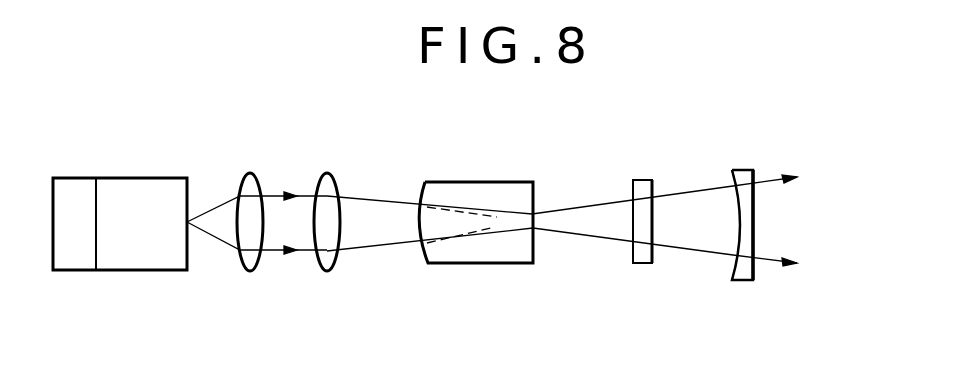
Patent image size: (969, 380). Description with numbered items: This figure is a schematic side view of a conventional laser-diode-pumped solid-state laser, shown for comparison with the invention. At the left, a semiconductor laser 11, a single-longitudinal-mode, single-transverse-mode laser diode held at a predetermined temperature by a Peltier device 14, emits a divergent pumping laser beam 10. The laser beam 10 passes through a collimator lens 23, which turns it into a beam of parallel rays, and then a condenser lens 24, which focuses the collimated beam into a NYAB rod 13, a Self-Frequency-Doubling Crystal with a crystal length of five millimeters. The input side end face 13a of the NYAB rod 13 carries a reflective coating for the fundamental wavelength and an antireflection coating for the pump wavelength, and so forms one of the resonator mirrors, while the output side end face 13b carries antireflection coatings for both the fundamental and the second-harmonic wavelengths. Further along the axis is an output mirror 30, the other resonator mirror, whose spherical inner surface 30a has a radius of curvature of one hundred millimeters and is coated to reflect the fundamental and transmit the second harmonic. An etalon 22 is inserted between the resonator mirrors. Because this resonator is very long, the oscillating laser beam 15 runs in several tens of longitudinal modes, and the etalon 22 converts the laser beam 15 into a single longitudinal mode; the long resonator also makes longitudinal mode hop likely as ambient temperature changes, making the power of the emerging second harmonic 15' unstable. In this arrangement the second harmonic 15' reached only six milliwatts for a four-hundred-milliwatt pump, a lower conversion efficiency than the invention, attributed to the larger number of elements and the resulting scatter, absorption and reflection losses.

The laser beam 10 is at (227, 242).
The semiconductor laser 11 is at (138, 187).
The Peltier device 14 is at (72, 190).
The collimator lens 23 is at (252, 173).
The condenser lens 24 is at (332, 173).
The NYAB rod 13 is at (494, 167).
The input side end face 13a is at (420, 208).
The output side end face 13b is at (537, 193).
The laser beam 15 is at (632, 245).
The etalon 22 is at (643, 257).
The output mirror 30 is at (736, 289).
The spherical inner surface 30a is at (733, 200).
The second harmonic 15' is at (775, 260).